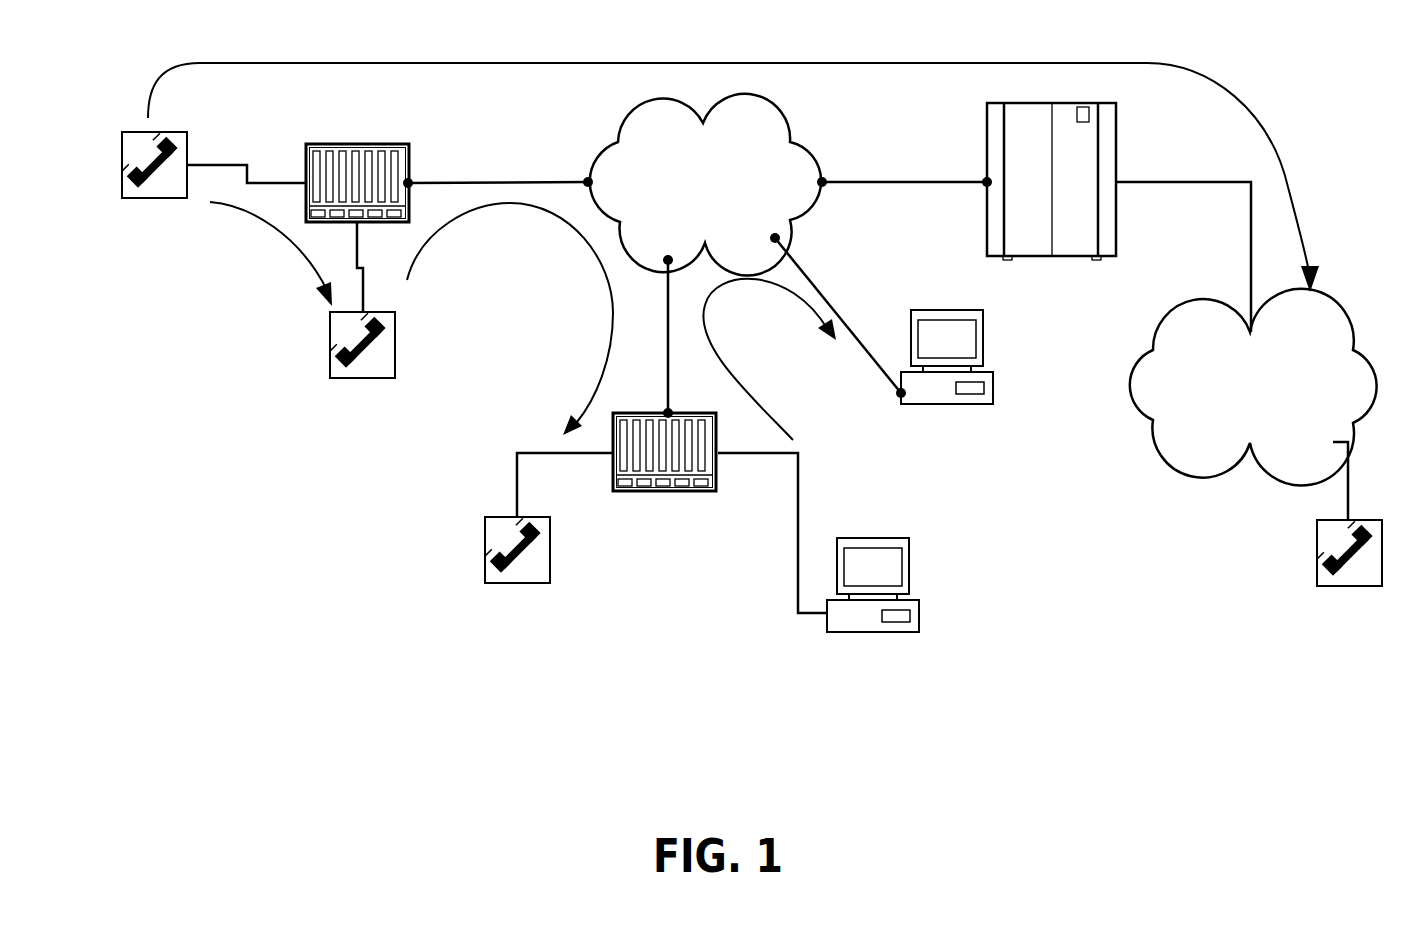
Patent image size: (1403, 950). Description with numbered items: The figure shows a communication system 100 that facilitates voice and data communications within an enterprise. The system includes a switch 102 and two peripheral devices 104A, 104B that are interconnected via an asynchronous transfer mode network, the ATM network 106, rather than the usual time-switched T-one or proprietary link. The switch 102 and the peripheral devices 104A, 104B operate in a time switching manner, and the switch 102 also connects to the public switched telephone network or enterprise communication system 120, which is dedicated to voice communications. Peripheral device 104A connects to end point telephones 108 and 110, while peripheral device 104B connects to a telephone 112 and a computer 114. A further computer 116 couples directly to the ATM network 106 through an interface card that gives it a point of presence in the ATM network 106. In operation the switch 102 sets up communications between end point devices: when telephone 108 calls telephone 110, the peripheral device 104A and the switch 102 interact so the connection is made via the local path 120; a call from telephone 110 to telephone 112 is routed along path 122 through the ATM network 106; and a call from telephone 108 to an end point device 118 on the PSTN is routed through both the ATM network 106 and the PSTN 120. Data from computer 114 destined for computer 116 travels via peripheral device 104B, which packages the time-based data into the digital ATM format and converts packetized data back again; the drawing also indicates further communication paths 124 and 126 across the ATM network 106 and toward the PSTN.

The communication system 100 is at (474, 678).
The switch 102 is at (987, 109).
The peripheral device 104A is at (390, 146).
The peripheral device 104B is at (668, 493).
The asynchronous transfer mode (ATM) network 106 is at (705, 185).
The telephone 108 is at (122, 142).
The telephone 110 is at (330, 327).
The telephone 112 is at (485, 524).
The computer 114 is at (920, 613).
The computer 116 is at (982, 329).
The end point device 118 is at (1317, 530).
The public switched telephone network (PSTN) or enterprise communication system / pa 120 is at (298, 245).
The path 122 is at (600, 258).
The call path 124 is at (705, 313).
The call path 126 is at (705, 62).